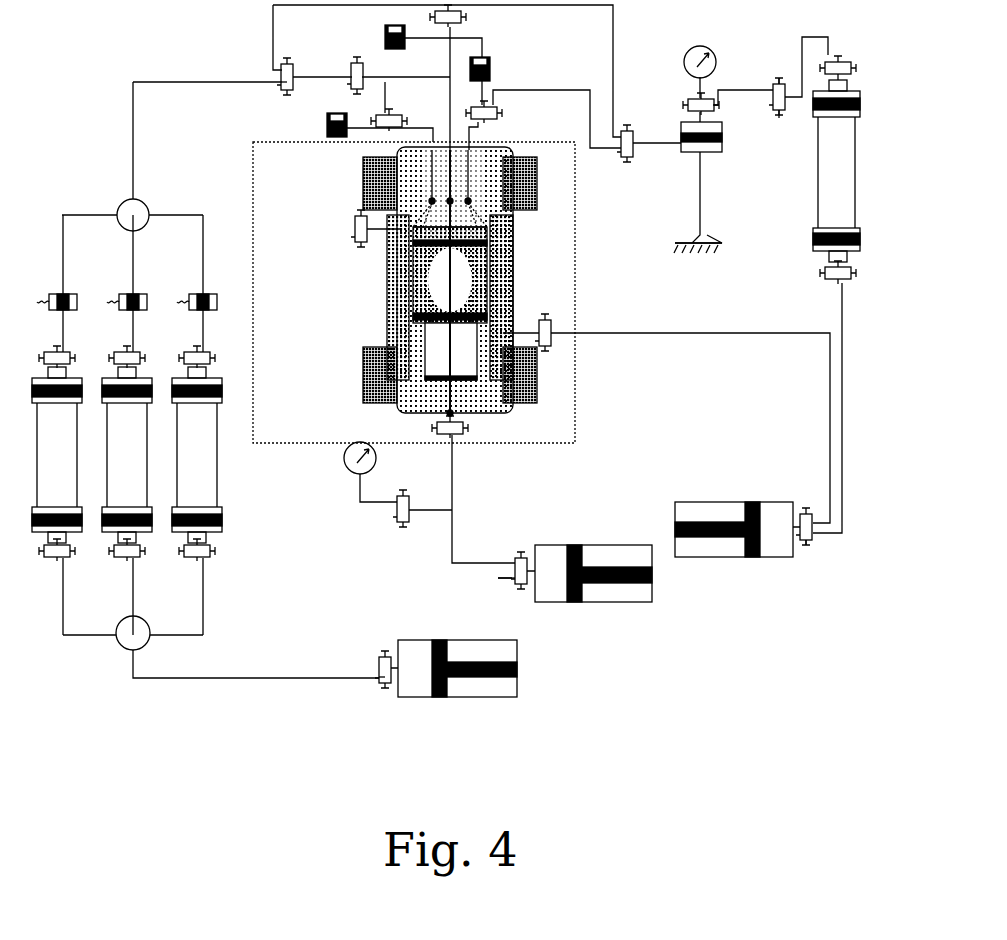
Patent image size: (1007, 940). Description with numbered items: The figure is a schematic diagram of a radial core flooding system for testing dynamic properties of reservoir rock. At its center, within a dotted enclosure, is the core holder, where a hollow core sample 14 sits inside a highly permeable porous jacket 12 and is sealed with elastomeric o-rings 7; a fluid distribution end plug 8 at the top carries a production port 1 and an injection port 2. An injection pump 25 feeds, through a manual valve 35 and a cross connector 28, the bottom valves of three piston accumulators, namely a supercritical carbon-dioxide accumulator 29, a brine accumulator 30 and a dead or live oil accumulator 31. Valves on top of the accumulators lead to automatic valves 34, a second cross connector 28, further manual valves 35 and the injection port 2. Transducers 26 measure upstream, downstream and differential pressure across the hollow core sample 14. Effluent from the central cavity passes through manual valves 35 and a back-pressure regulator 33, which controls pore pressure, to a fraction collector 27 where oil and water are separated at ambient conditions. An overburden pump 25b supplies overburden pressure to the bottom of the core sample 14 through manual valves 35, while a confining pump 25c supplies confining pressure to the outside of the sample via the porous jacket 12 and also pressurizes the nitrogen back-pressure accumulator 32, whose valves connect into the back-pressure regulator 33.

The production port 1 is at (453, 210).
The injection port 2 is at (430, 182).
The elastomeric o-ring 7 is at (405, 300).
The fluid distribution end plug 8 is at (410, 215).
The porous jacket 12 is at (483, 263).
The core sample 14 is at (473, 293).
The injection pump 25 is at (457, 655).
The overburden pump 25b is at (593, 560).
The confining pump 25c is at (734, 518).
The transducer 26 is at (407, 82).
The fraction collector 27 is at (698, 262).
The cross connector 28 is at (111, 427).
The supercritical CO2 accumulator 29 is at (57, 455).
The brine accumulator 30 is at (127, 455).
The dead/live oil accumulator 31 is at (197, 455).
The N2 accumulator 32 is at (836, 171).
The back-pressure regulator 33 is at (711, 115).
The automatic valve 34 is at (119, 288).
The manual valve 35 is at (455, 363).